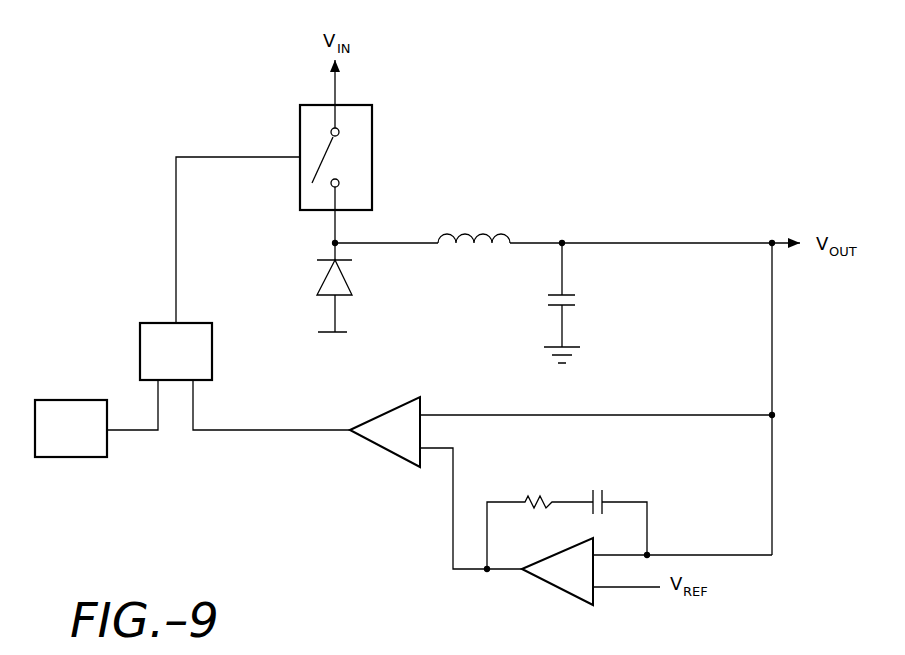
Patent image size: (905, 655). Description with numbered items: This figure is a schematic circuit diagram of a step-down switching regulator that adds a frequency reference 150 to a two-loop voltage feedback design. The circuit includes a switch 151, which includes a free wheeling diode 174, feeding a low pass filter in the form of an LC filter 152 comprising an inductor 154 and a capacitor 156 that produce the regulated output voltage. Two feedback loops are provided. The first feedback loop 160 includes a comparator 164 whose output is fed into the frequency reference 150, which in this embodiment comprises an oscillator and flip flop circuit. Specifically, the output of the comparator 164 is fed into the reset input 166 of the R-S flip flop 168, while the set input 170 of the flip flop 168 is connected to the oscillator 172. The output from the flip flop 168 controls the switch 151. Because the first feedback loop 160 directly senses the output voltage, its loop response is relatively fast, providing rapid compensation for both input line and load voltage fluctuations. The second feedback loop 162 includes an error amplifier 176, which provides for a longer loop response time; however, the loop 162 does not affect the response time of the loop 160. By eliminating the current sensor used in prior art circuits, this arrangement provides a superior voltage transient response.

The frequency reference 150 is at (132, 335).
The switch 151 is at (390, 117).
The LC filter 152 is at (563, 216).
The inductor 154 is at (476, 258).
The capacitor 156 is at (583, 309).
The first feedback loop 160 is at (747, 343).
The second feedback loop 162 is at (745, 442).
The comparator 164 is at (435, 399).
The reset input 166 is at (209, 395).
The R-S flip flop 168 is at (237, 355).
The set input 170 is at (165, 394).
The oscillator 172 is at (71, 464).
The free wheeling diode 174 is at (316, 273).
The error amplifier 176 is at (552, 593).